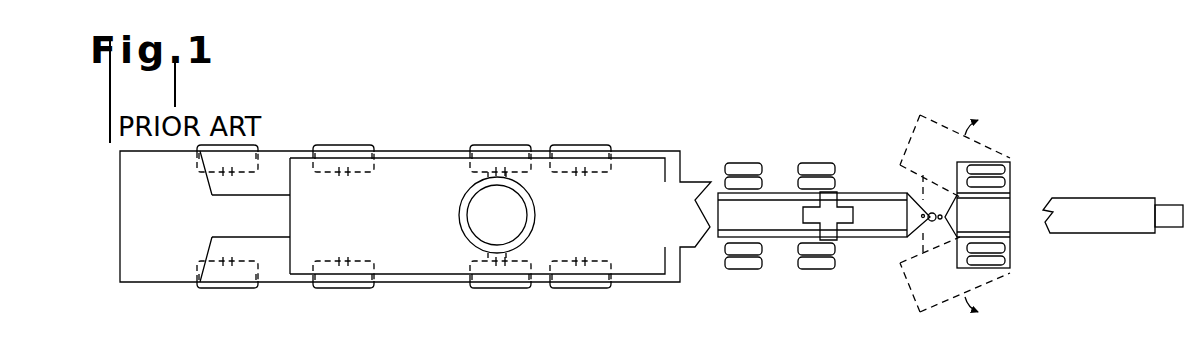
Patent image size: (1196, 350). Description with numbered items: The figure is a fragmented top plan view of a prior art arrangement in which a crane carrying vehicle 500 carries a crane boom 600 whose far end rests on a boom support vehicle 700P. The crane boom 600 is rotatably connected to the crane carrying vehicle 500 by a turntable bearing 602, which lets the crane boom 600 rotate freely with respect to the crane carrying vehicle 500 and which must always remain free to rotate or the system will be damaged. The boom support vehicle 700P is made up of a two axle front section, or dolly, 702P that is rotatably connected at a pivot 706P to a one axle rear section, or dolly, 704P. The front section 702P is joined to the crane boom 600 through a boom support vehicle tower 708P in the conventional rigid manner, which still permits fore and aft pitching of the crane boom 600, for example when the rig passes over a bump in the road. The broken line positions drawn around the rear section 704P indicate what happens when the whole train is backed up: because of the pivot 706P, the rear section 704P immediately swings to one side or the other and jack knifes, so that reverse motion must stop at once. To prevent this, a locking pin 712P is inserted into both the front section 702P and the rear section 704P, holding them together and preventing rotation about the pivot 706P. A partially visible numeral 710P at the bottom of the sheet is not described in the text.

The crane carrying vehicle 500 is at (198, 300).
The turntable bearing 602 is at (492, 210).
The crane boom 600 is at (1095, 215).
The boom support vehicle 700P is at (818, 152).
The front section 702P is at (787, 210).
The rear section 704P is at (955, 237).
The pivot 706P is at (930, 217).
The boom support vehicle tower 708P is at (827, 213).
The dolly axle 710P is at (904, 348).
The locking pin 712P is at (905, 220).